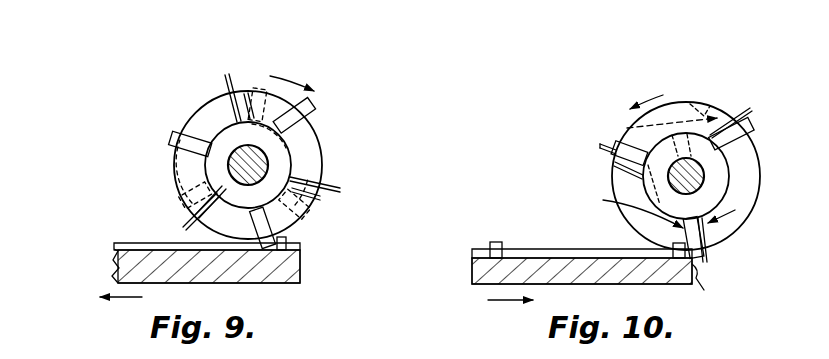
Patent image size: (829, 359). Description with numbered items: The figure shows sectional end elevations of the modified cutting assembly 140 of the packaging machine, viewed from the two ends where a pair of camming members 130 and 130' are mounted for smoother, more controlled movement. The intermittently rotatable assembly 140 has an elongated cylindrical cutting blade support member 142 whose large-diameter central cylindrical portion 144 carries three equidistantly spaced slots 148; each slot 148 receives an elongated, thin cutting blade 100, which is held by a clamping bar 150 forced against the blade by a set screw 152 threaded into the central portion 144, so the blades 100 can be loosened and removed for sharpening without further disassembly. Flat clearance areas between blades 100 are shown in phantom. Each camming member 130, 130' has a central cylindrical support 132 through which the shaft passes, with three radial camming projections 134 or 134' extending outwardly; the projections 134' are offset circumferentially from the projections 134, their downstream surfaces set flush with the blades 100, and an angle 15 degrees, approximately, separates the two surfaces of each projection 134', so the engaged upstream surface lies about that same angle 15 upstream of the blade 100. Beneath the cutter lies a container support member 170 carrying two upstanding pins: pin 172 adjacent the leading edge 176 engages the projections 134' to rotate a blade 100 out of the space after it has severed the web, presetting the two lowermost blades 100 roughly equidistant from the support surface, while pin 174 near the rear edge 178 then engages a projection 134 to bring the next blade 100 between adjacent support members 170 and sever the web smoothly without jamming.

In FIG. 9, the cutting blade 100 is at (226, 74).
In FIG. 10, the cutting blade 100 is at (600, 146).
In FIG. 9, the camming member 130 is at (223, 161).
In FIG. 10, the second camming member 130' is at (716, 176).
In FIG. 9, the central cylindrical support 132 is at (292, 150).
In FIG. 9, the radial camming projection 134 is at (243, 180).
In FIG. 10, the radial camming projection 134 is at (763, 130).
In FIG. 10, the radial camming projection 134' is at (691, 171).
In FIG. 9, the cutting assembly 140 is at (350, 90).
In FIG. 9, the cutting blade support member 142 is at (318, 140).
In FIG. 10, the cutting blade support member 142 is at (677, 104).
In FIG. 9, the central cylindrical portion 144 is at (302, 160).
In FIG. 9, the slot 148 is at (243, 95).
In FIG. 9, the clamping bar 150 is at (238, 94).
In FIG. 9, the set screw 152 is at (292, 66).
In FIG. 9, the container support member 170 is at (290, 286).
In FIG. 10, the container support member 170 is at (566, 222).
In FIG. 10, the projection or pin 172 is at (672, 252).
In FIG. 10, the projection or pin 174 is at (497, 241).
In FIG. 10, the leading edge 176 is at (702, 286).
In FIG. 9, the rear edge 178 is at (300, 280).
In FIG. 10, the rear edge 178 is at (472, 282).
In FIG. 10, the blade angle 15 degrees 15 is at (657, 196).